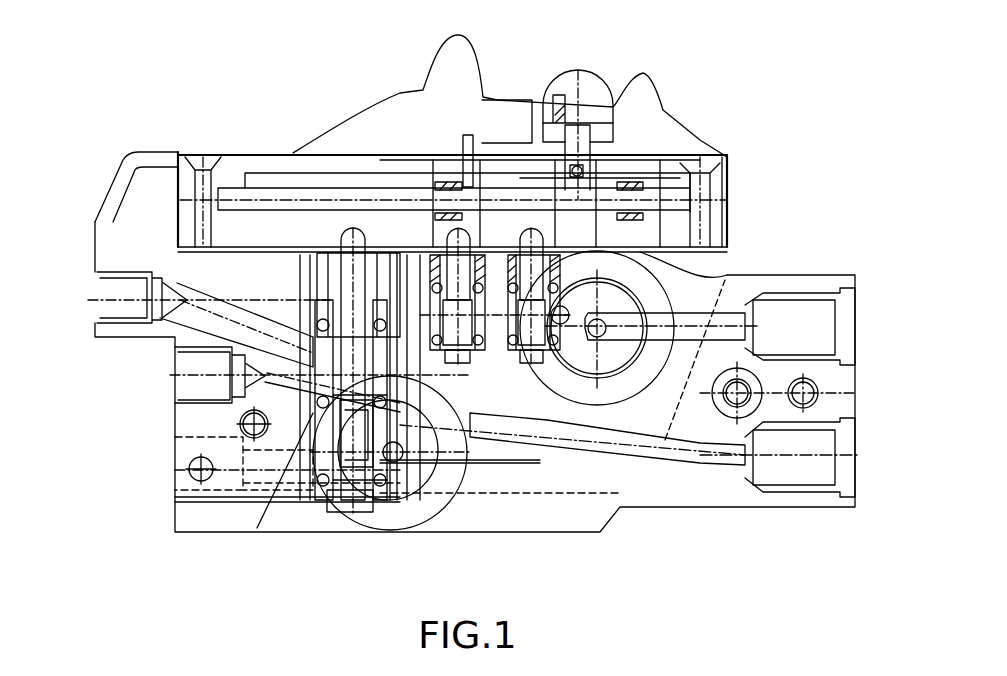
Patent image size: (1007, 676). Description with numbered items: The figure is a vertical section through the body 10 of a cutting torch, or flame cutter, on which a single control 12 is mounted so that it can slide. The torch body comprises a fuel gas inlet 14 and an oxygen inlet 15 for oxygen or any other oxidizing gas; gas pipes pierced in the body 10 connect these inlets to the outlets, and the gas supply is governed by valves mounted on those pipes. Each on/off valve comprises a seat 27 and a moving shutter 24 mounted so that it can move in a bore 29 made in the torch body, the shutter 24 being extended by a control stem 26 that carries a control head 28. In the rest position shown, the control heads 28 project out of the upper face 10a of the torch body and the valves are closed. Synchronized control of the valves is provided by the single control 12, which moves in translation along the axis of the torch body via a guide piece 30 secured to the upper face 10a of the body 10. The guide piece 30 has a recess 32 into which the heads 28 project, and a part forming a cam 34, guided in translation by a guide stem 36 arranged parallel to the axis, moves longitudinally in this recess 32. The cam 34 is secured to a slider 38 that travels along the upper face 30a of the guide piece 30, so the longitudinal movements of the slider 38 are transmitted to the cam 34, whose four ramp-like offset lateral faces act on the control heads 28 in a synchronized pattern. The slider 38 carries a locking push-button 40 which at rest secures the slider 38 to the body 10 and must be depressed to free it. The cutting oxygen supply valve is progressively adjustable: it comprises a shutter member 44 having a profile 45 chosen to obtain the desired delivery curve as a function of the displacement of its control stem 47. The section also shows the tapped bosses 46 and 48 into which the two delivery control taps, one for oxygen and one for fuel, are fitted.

The body 10 is at (205, 520).
The upper face 10a is at (697, 248).
The single control 12 is at (688, 92).
The fuel gas inlet 14 is at (827, 317).
The oxygen inlet 15 is at (822, 445).
The moving shutter 24 is at (522, 355).
The control stem 26 is at (490, 245).
The seat 27 is at (550, 348).
The control head 28 is at (560, 255).
The bore 29 is at (660, 270).
The guide piece 30 is at (230, 157).
The upper face 30a is at (197, 157).
The recess 32 is at (268, 230).
The cam 34 is at (620, 235).
The guide stem 36 is at (333, 190).
The slider 38 is at (640, 90).
The locking push-button 40 is at (563, 80).
The shutter member 44 is at (323, 483).
The profile 45 is at (318, 414).
The tapped boss 46 is at (627, 388).
The control stem 47 is at (360, 280).
The tapped boss 48 is at (403, 515).